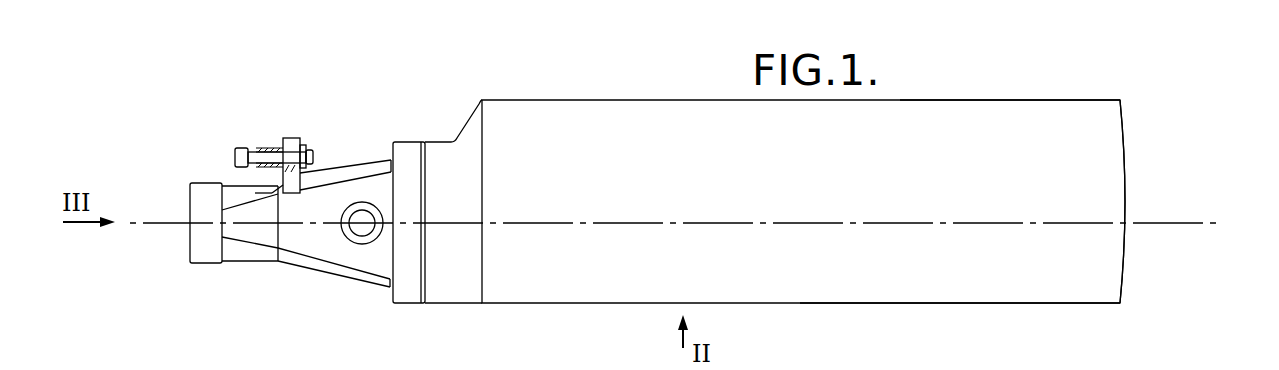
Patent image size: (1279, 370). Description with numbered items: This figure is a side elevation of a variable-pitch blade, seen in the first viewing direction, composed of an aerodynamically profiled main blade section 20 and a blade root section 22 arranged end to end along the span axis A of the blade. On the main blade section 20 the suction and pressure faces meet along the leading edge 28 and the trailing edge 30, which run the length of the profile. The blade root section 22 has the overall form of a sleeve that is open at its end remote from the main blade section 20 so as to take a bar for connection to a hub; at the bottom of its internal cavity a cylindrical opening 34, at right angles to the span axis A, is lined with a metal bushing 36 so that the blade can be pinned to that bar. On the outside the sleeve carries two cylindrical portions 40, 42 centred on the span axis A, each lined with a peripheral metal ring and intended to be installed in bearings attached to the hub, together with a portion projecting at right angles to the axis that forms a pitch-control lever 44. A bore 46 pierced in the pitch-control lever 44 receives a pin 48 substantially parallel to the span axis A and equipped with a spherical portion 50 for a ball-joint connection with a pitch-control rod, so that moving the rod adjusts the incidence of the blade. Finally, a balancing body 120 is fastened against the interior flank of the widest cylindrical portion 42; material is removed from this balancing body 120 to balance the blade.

The main blade section 20 is at (597, 120).
The blade root section 22 is at (293, 198).
The leading edge 28 is at (938, 305).
The trailing edge 30 is at (943, 100).
The cylindrical opening 34 is at (363, 232).
The metal bushing 36 is at (350, 240).
The cylindrical portion 40 is at (206, 258).
The cylindrical portion 42 is at (410, 290).
The pitch-control lever 44 is at (290, 136).
The bore 46 is at (299, 150).
The pin 48 is at (235, 157).
The spherical portion 50 is at (260, 150).
The balancing body 120 is at (391, 198).
The span axis A is at (1213, 223).